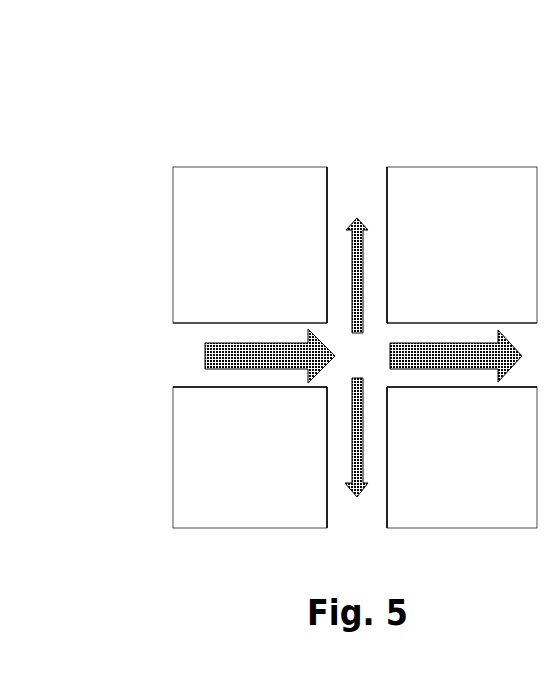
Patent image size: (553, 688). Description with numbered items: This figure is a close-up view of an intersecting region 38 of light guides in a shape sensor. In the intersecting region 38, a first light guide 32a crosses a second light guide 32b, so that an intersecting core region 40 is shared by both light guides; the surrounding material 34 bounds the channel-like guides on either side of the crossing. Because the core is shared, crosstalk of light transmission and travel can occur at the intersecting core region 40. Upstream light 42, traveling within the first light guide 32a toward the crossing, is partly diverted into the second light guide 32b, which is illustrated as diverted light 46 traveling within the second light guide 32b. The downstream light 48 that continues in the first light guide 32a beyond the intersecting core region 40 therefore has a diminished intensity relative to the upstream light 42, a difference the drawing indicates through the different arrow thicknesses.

The intersecting region 38 is at (180, 108).
The plate section 34 is at (215, 480).
The first light guide 32a is at (188, 362).
The second light guide 32b is at (353, 188).
The intersecting core region 40 is at (360, 355).
The upstream light 42 is at (255, 343).
The diverted light 46 is at (356, 220).
The downstream light 48 is at (498, 346).